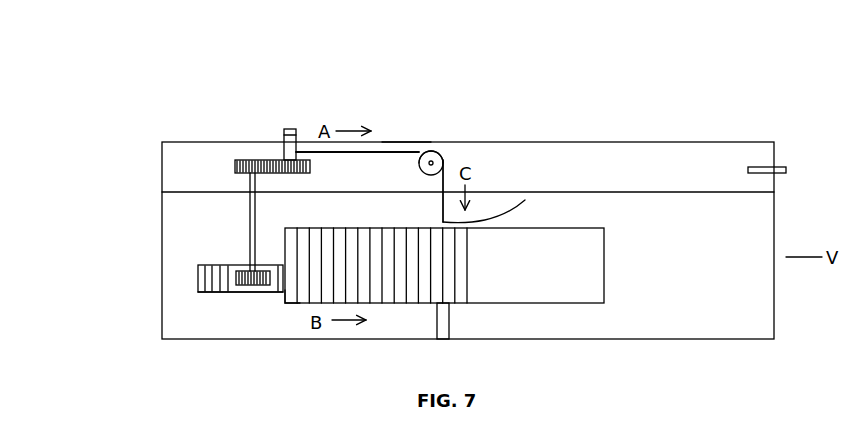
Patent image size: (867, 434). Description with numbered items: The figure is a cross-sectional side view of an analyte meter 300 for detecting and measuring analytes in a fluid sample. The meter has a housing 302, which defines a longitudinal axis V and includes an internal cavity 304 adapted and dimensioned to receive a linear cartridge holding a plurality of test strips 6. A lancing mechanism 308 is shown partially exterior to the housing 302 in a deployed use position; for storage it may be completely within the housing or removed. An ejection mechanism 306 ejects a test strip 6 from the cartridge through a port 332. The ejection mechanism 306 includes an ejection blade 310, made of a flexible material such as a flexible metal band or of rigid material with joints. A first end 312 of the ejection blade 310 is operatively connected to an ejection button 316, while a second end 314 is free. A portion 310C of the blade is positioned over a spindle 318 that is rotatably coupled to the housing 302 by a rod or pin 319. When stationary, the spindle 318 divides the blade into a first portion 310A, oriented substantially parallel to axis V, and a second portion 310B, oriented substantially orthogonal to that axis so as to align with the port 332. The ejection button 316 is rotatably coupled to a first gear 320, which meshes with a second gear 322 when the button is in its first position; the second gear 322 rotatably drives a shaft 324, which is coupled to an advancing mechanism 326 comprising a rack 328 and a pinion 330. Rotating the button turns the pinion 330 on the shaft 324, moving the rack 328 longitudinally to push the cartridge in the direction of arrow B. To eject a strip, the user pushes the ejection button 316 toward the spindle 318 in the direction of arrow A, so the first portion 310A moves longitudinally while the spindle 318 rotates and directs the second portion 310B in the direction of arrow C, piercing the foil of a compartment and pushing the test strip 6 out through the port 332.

The analyte meter 300 is at (752, 85).
The housing 302 is at (637, 339).
The internal cavity 304 is at (295, 313).
The ejection mechanism 306 is at (411, 131).
The lancing mechanism 308 is at (786, 173).
The ejection blade 310 is at (396, 140).
The first portion 310A is at (382, 142).
The second portion 310B is at (445, 168).
The portion of ejection blade 310C is at (437, 152).
The first end 312 is at (299, 152).
The second end 314 is at (443, 222).
The ejection button 316 is at (288, 128).
The spindle 318 is at (441, 157).
The rod or pin 319 is at (425, 175).
The first gear 320 is at (293, 172).
The second gear 322 is at (238, 160).
The shaft 324 is at (250, 216).
The advancing mechanism 326 is at (211, 297).
The rack 328 is at (198, 271).
The pinion 330 is at (252, 293).
The port 332 is at (447, 320).
The test strip 6 is at (403, 303).